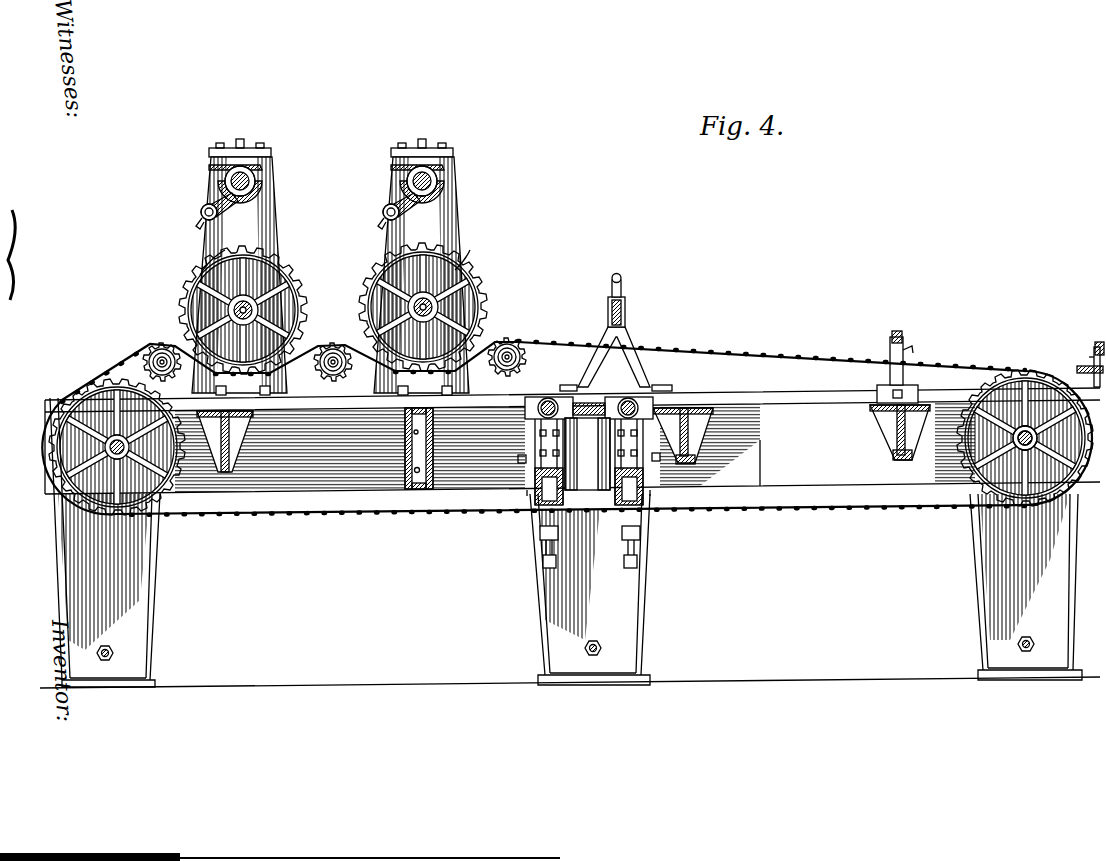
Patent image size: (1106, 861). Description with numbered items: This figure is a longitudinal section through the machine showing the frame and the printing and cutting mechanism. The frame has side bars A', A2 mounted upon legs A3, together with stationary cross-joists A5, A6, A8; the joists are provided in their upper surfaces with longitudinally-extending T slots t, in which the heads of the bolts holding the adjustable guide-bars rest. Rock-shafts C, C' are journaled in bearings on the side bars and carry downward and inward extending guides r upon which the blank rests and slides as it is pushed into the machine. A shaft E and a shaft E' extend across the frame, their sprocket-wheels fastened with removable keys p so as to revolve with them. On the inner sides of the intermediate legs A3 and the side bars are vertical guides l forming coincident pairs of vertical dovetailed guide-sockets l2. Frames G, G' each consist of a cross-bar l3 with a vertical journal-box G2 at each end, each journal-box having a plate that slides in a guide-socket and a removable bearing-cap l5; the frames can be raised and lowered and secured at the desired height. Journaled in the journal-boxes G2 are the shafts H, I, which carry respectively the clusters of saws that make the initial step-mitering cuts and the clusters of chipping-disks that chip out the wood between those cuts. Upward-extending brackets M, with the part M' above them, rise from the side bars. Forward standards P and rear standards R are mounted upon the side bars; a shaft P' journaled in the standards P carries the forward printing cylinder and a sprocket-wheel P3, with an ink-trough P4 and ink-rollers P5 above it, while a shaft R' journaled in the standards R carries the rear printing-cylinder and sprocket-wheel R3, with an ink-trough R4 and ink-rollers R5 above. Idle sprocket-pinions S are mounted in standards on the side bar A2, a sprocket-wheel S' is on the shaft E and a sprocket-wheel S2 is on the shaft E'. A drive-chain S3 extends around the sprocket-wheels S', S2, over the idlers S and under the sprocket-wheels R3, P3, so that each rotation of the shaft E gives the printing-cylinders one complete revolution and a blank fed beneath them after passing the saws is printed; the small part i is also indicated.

The rear standard R is at (249, 267).
The shaft R' is at (218, 310).
The sprocket-wheel R3 is at (207, 270).
The ink-trough R4 is at (258, 180).
The ink-rollers R5 is at (225, 182).
The forward standard P is at (434, 267).
The shaft P' is at (451, 307).
The sprocket-wheel P3 is at (465, 254).
The ink-trough P4 is at (447, 171).
The ink-rollers P5 is at (408, 180).
The idle sprocket-pinions S is at (327, 338).
The sprocket-wheel S' is at (108, 368).
The sprocket-wheel S2 is at (1025, 372).
The drive-chain S3 is at (110, 367).
The shaft E is at (94, 447).
The shaft E' is at (983, 498).
The removable keys p is at (1020, 440).
The brackets M is at (619, 352).
The bracket pin M' is at (644, 297).
The shaft I is at (550, 400).
The shaft H is at (633, 405).
The vertical journal-box G2 is at (575, 407).
The frame G is at (668, 496).
The frame G' is at (517, 496).
The vertical guides l is at (587, 454).
The cross-bar l3 is at (613, 497).
The vertical dovetailed guide-sockets l2 is at (620, 533).
The bearing-cap l5 is at (612, 562).
The pin i is at (522, 462).
The T slots t is at (687, 413).
The side bar A2 is at (783, 405).
The side bar A' is at (237, 443).
The legs A3 is at (155, 603).
The cross-joist A5 is at (893, 447).
The cross-joist A6 is at (755, 440).
The cross-joist A8 is at (505, 462).
The rock-shaft C is at (1090, 346).
The rock-shaft C' is at (895, 357).
The guides r is at (900, 357).